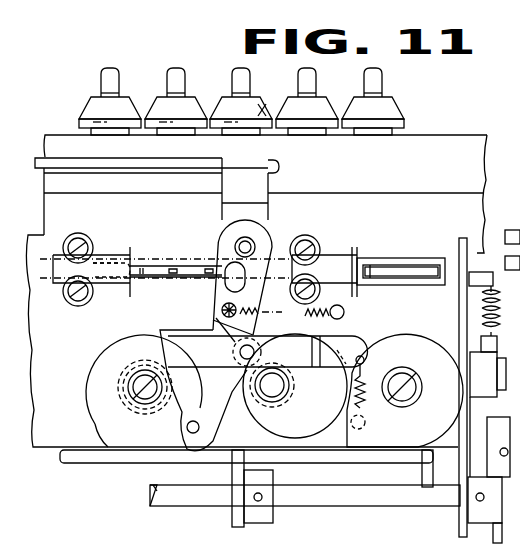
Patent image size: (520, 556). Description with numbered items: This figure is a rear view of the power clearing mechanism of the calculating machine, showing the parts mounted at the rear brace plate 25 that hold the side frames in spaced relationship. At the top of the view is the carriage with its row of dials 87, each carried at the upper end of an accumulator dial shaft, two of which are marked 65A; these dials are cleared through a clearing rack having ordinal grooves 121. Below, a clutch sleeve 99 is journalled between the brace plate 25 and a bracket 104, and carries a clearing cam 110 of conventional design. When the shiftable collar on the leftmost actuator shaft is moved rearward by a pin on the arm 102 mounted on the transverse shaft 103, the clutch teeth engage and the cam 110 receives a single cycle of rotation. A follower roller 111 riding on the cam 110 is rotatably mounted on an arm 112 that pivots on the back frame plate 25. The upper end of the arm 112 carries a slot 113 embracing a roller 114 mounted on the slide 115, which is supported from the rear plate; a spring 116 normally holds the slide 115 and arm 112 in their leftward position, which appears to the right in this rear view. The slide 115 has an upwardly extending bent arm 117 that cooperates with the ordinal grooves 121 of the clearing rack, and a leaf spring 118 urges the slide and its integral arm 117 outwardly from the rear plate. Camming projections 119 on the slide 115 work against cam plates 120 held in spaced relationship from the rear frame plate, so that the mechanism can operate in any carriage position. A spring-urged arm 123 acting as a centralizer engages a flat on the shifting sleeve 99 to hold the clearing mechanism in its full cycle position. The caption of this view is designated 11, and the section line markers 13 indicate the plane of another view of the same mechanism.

The typewriter mechanism (FIG. 11 section) 11 is at (512, 330).
The section line 13 is at (192, 252).
The brace plate 25 is at (66, 405).
The key 65A is at (340, 101).
The dial 87 is at (262, 108).
The sleeve 99 is at (268, 402).
The arm 102 is at (235, 518).
The transverse shaft 103 is at (157, 495).
The bracket 104 is at (108, 413).
The clearing cam 110 is at (327, 400).
The follower roller 111 is at (252, 337).
The arm 112 is at (217, 333).
The slot 113 is at (228, 275).
The roller 114 is at (252, 245).
The slide 115 is at (382, 262).
The spring 116 is at (322, 314).
The bent arm 117 is at (262, 182).
The leaf spring 118 is at (115, 259).
The camming projections 119 is at (156, 272).
The cam plates 120 is at (107, 295).
The ordinal grooves 121 is at (173, 165).
The spring-urged arm 123 is at (208, 364).